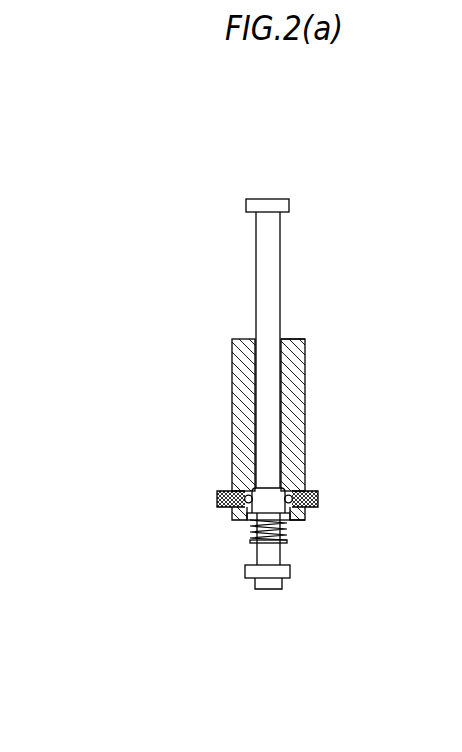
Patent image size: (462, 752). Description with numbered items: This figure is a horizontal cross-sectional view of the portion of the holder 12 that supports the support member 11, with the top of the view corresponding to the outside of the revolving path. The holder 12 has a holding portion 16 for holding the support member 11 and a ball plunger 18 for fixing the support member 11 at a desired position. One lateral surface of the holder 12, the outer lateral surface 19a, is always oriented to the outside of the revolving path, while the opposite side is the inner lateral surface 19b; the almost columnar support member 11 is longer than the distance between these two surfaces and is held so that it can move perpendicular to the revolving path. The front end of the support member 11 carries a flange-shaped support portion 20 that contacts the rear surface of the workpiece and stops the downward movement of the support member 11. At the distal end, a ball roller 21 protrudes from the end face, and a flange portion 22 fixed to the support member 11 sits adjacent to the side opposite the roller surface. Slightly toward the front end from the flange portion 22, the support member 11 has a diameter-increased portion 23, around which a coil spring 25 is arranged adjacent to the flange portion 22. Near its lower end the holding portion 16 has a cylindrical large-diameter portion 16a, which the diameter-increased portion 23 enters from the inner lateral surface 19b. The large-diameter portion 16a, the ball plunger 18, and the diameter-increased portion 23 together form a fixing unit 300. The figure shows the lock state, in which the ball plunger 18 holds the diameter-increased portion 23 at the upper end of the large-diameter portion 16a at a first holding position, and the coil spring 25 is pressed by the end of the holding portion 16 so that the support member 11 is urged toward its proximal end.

The support member 11 is at (282, 261).
The holder 12 is at (197, 322).
The holding portion 16 is at (300, 392).
The large-diameter portion 16a is at (255, 489).
The ball plunger 18 is at (320, 499).
The outer lateral surface 19a is at (291, 339).
The inner lateral surface 19b is at (300, 521).
The support portion 20 is at (290, 205).
The ball roller 21 is at (283, 584).
The flange portion 22 is at (291, 571).
The diameter-increased portion 23 is at (290, 495).
The coil spring 25 is at (275, 532).
The fixing unit 300 is at (212, 509).